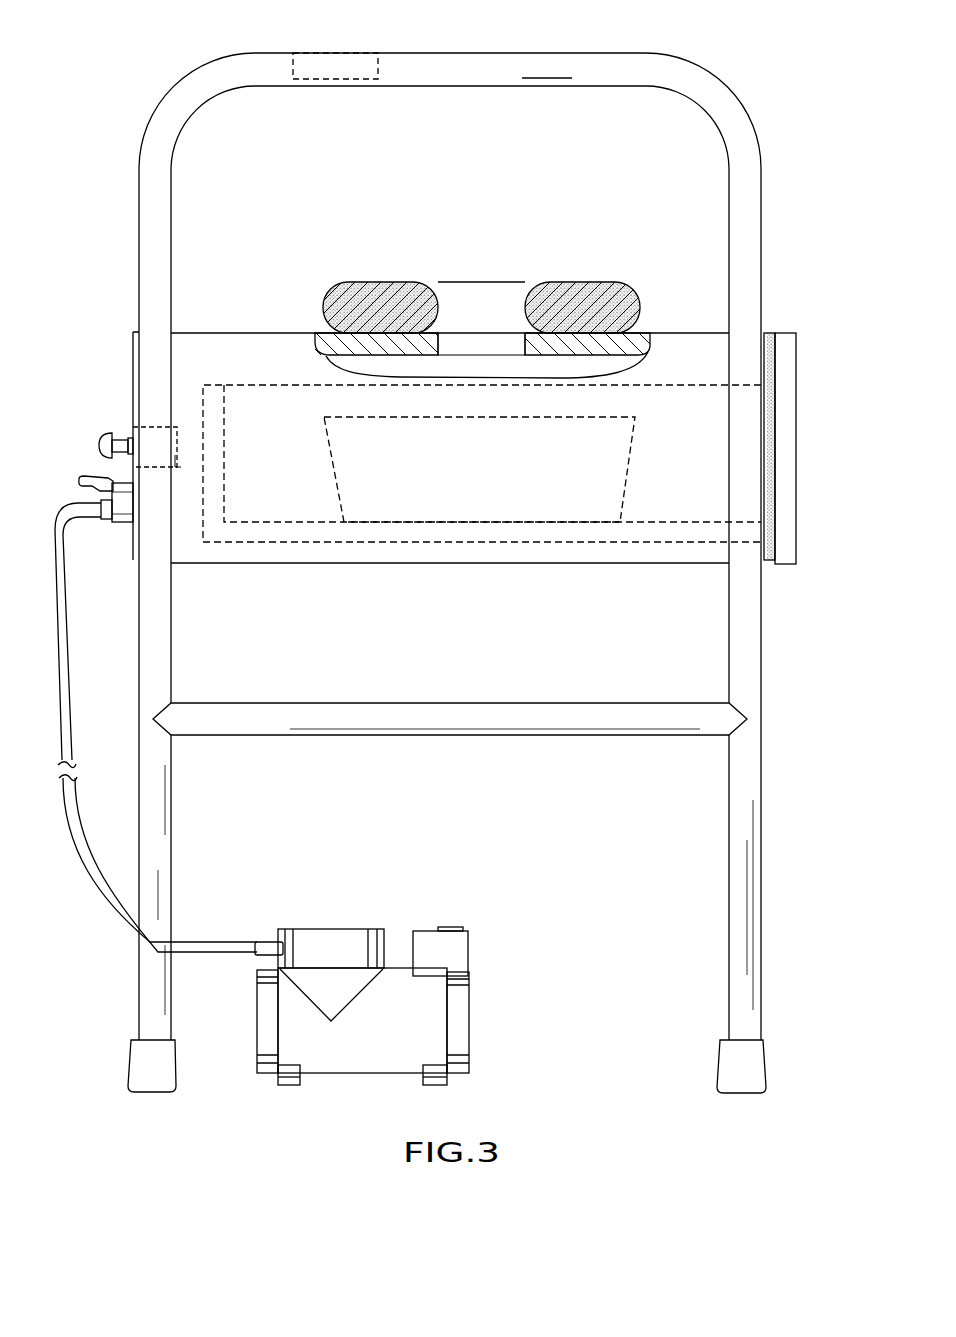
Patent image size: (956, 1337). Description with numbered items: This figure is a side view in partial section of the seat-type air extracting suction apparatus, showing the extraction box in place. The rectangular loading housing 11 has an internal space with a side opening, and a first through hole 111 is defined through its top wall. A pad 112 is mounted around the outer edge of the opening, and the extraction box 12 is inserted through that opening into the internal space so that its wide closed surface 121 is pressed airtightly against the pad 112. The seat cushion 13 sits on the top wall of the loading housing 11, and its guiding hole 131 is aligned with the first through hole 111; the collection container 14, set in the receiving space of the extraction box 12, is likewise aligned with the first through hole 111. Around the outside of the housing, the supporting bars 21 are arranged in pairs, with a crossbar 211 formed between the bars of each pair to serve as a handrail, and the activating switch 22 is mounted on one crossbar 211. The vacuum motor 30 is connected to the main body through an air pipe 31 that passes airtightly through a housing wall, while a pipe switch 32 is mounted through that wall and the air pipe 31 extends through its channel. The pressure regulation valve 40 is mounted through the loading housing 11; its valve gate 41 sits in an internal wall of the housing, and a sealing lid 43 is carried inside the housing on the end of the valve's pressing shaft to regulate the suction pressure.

The loading housing 11 is at (640, 345).
The first through hole 111 is at (466, 340).
The pad 112 is at (770, 565).
The extraction box 12 is at (595, 537).
The closed surface 121 is at (790, 503).
The seat cushion 13 is at (350, 290).
The guiding hole 131 is at (508, 295).
The collection container 14 is at (447, 497).
The supporting bars 21 is at (158, 840).
The crossbar 211 is at (545, 68).
The activating switch 22 is at (368, 63).
The vacuum motor 30 is at (483, 972).
The air pipe 31 is at (122, 910).
The pipe switch 32 is at (124, 522).
The pressure regulation valve 40 is at (117, 428).
The valve gate 41 is at (155, 437).
The sealing lid 43 is at (177, 460).